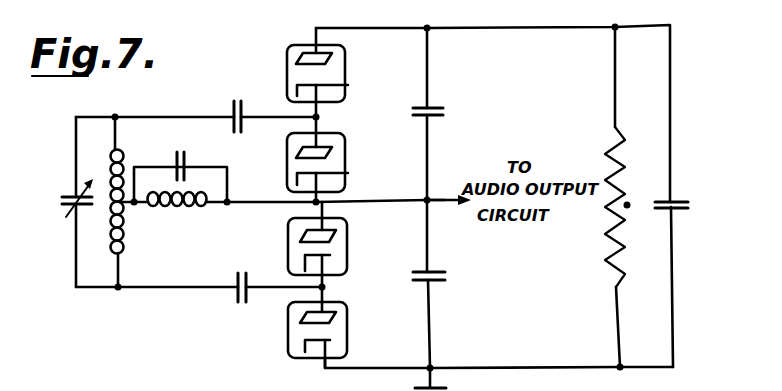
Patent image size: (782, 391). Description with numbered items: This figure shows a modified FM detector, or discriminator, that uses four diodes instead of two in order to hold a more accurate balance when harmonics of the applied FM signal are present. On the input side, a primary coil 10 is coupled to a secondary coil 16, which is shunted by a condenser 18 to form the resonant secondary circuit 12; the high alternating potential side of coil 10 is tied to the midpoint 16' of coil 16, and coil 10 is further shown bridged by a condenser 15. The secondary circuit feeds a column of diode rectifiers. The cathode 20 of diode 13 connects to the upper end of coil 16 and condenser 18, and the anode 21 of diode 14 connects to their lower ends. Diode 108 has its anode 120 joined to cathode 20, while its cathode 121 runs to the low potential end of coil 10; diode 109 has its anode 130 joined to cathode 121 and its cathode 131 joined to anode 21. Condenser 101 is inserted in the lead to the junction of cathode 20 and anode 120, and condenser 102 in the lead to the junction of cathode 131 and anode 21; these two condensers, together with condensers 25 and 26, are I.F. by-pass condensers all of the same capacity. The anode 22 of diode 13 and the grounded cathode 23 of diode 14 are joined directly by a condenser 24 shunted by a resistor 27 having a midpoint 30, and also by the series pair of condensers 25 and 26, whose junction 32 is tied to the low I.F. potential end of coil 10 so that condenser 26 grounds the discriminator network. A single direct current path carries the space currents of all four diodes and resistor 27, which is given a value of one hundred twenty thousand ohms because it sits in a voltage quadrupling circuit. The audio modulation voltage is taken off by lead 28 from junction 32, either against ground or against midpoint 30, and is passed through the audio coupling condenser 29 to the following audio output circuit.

The primary coil 10 is at (174, 212).
The resonant secondary circuit 12 is at (90, 245).
The diode 13 is at (286, 50).
The diode 14 is at (288, 328).
The capacitor 15 is at (191, 138).
The secondary coil 16 is at (137, 202).
The midpoint of coil 16 16' is at (147, 226).
The condenser 18 is at (68, 194).
The cathode of diode 13 20 is at (345, 85).
The anode of diode 14 21 is at (338, 304).
The anode of diode 13 22 is at (338, 52).
The cathode of diode 14 23 is at (326, 342).
The condenser 24 is at (681, 198).
The condenser 25 is at (414, 108).
The condenser 26 is at (447, 280).
The resistor 27 is at (622, 167).
The lead 28 is at (445, 205).
The condenser 29 is at (492, 379).
The midpoint of resistor 27 30 is at (627, 205).
The junction 32 is at (433, 197).
The condenser 101 is at (234, 101).
The condenser 102 is at (237, 296).
The diode 108 is at (345, 157).
The diode 109 is at (288, 238).
The anode of diode 108 120 is at (338, 142).
The cathode of diode 108 121 is at (345, 175).
The anode of diode 109 130 is at (340, 230).
The cathode of diode 109 131 is at (328, 255).